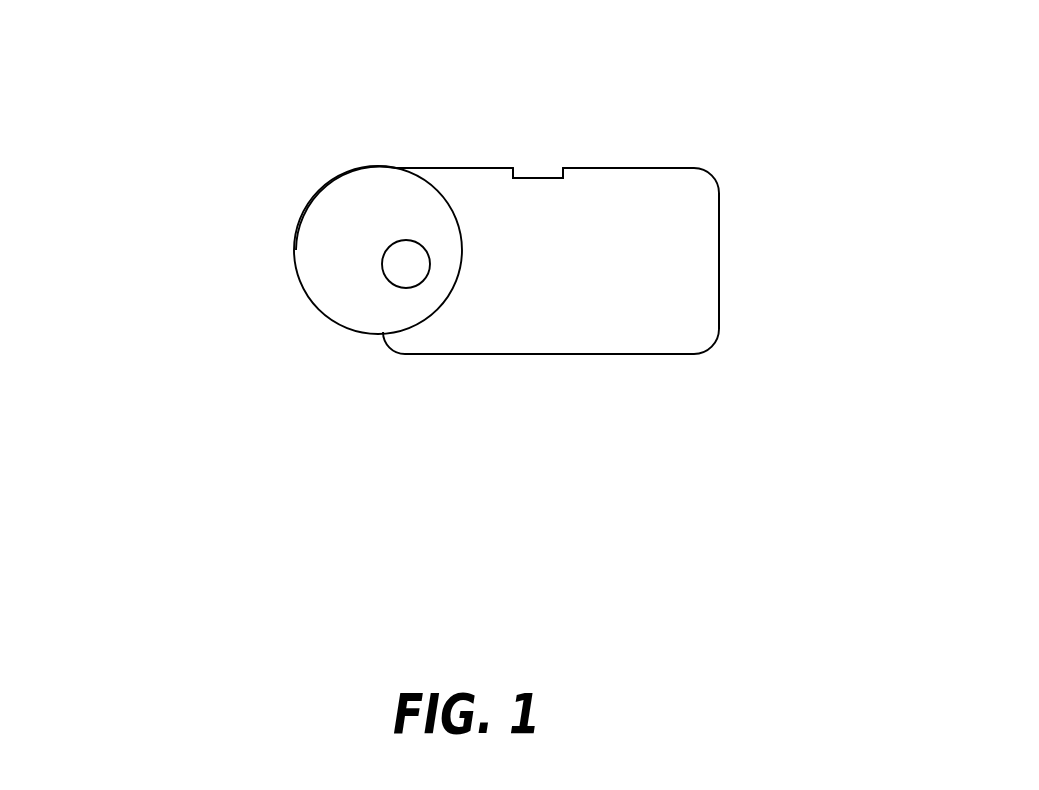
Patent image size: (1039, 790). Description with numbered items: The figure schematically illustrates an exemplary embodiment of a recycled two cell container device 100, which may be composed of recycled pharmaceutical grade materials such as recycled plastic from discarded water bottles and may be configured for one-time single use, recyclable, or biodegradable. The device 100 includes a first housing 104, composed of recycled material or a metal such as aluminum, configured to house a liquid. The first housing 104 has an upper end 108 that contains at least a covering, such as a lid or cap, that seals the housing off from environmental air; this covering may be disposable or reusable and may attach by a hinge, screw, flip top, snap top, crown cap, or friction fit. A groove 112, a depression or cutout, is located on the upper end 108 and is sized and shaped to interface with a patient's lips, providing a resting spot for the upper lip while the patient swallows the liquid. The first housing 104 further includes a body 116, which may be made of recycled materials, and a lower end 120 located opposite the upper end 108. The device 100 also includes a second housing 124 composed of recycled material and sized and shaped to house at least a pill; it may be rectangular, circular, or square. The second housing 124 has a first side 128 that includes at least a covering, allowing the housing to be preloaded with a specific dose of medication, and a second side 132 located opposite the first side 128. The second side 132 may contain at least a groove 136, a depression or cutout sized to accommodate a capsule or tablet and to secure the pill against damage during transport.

The recycled two cell container device 100 is at (882, 105).
The first housing 104 is at (602, 168).
The upper end 108 is at (458, 168).
The groove 112 is at (528, 177).
The body 116 is at (553, 355).
The lower end 120 is at (543, 317).
The second housing 124 is at (293, 240).
The first side 128 is at (360, 168).
The second side 132 is at (318, 288).
The groove 136 is at (393, 288).